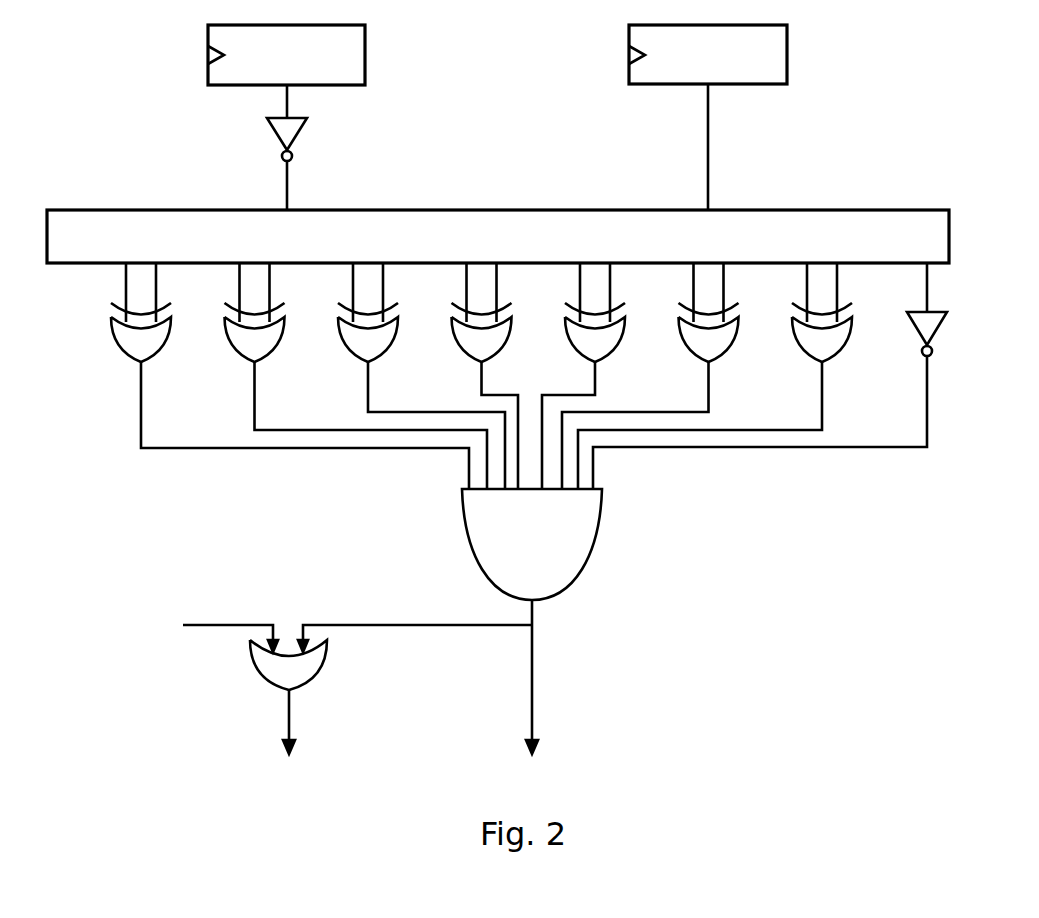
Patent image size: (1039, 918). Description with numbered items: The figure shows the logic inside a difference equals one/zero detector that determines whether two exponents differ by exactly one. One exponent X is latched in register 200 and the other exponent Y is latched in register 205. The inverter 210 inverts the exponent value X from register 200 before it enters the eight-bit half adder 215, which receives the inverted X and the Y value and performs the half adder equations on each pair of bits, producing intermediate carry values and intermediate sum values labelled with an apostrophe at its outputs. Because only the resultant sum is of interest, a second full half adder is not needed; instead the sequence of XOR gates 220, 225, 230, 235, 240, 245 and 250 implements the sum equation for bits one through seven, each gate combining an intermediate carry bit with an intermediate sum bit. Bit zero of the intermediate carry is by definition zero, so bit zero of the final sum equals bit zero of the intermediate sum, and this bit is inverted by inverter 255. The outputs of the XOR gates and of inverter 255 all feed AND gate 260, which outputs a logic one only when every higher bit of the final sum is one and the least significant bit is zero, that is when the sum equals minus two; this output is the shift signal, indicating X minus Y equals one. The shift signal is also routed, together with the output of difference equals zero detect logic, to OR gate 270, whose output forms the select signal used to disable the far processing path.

The register 200 is at (365, 55).
The register 205 is at (787, 55).
The inverter 210 is at (298, 133).
The 8-bit half adder 215 is at (880, 210).
The XOR gate 220 is at (151, 353).
The XOR gate 225 is at (264, 353).
The XOR gate 230 is at (378, 353).
The XOR gate 235 is at (492, 353).
The XOR gate 240 is at (605, 353).
The XOR gate 245 is at (718, 353).
The XOR gate 250 is at (832, 353).
The inverter 255 is at (938, 328).
The AND gate 260 is at (596, 538).
The OR gate 270 is at (322, 662).